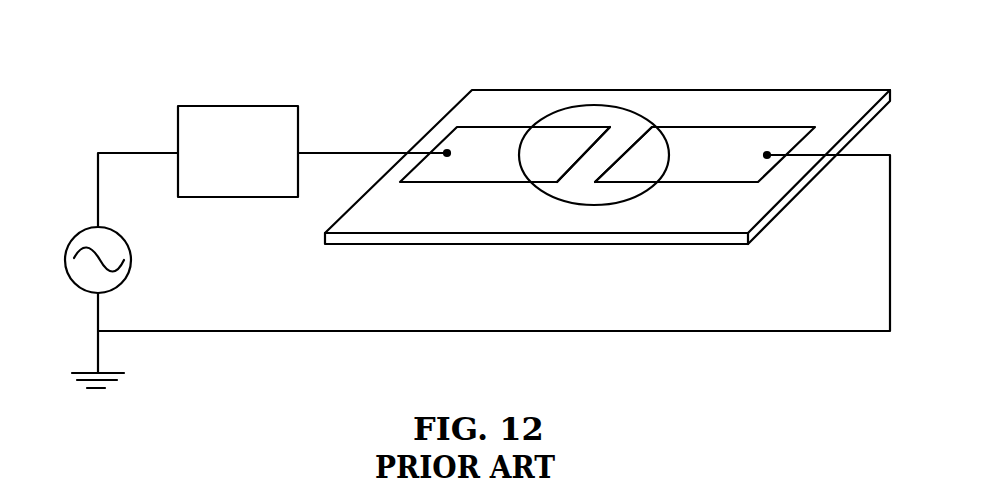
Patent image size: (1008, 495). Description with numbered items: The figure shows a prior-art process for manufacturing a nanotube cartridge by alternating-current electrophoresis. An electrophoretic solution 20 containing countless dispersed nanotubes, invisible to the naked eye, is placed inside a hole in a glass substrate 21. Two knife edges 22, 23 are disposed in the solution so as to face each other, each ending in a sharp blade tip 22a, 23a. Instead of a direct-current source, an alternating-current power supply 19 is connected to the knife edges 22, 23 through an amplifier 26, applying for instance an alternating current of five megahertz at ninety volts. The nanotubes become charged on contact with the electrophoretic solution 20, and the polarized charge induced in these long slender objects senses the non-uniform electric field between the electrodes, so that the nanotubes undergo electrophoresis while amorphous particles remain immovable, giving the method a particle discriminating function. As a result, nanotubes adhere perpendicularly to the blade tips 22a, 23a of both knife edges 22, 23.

The alternating-current power supply 19 is at (126, 241).
The amplifier 26 is at (238, 151).
The glass substrate 21 is at (715, 215).
The knife edge 23 is at (510, 140).
The knife edge 22 is at (728, 148).
The electrophoretic solution 20 is at (625, 130).
The blade tip 23a is at (580, 158).
The blade tip 22a is at (633, 160).